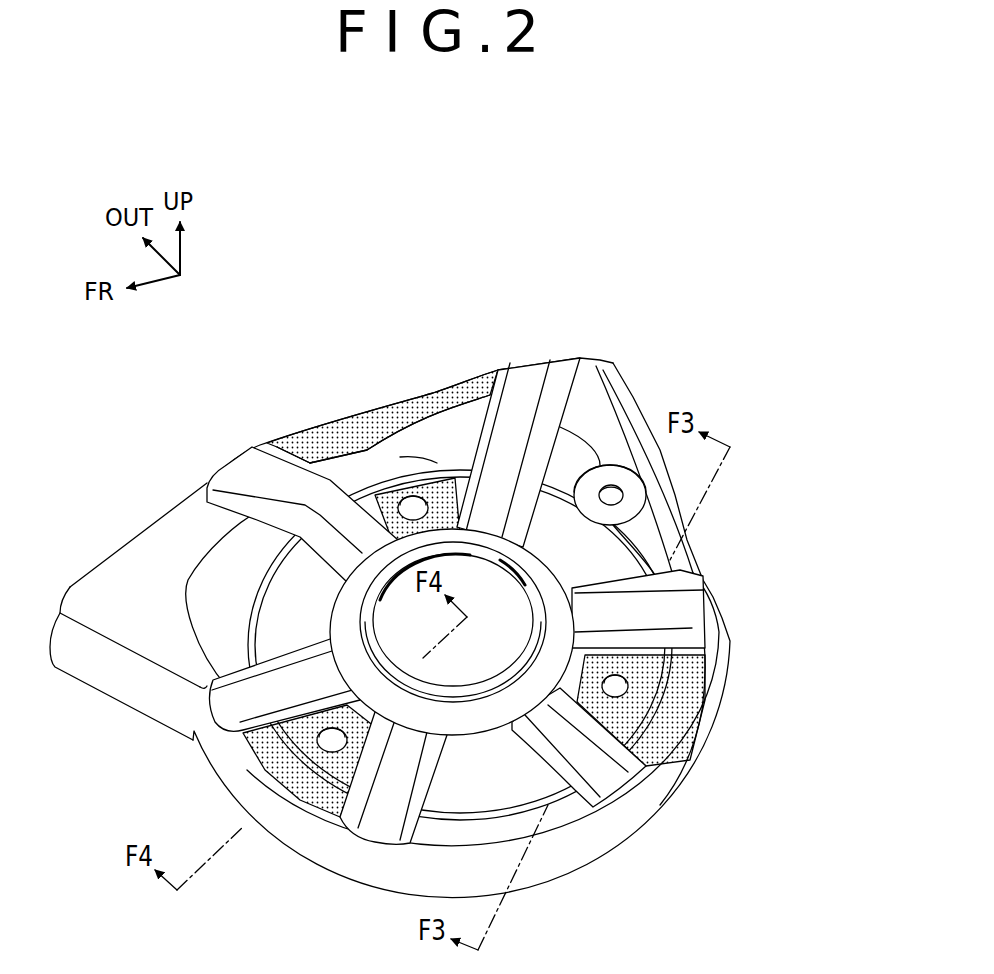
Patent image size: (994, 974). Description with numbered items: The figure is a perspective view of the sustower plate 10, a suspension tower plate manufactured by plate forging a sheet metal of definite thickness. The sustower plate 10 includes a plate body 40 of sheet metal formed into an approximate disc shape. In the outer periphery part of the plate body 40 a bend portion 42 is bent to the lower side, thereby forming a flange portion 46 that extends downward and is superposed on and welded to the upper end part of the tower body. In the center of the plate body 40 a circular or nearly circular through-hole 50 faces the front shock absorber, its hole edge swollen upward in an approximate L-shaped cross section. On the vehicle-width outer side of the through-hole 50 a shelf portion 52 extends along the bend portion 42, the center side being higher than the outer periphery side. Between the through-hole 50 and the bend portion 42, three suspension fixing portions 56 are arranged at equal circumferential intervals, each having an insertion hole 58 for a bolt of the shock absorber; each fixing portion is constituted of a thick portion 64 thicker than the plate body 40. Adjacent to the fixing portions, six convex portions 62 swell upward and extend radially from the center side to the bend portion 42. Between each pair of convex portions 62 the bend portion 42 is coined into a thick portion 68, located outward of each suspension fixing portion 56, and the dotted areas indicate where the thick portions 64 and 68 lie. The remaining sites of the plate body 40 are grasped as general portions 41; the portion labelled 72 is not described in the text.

The sustower plate 10 is at (519, 248).
The plate body 40 is at (142, 521).
The general portions 41 is at (603, 405).
The bend portion 42 is at (568, 812).
The flange portion 46 is at (545, 865).
The through-hole 50 is at (505, 570).
The shelf portion 52 is at (348, 452).
The suspension fixing portions 56 is at (440, 480).
The insertion hole 58 is at (413, 505).
The convex portions 62 is at (522, 385).
The thick portion 64 is at (471, 563).
The thick portion 68 is at (447, 465).
The arm portion 72 is at (127, 580).